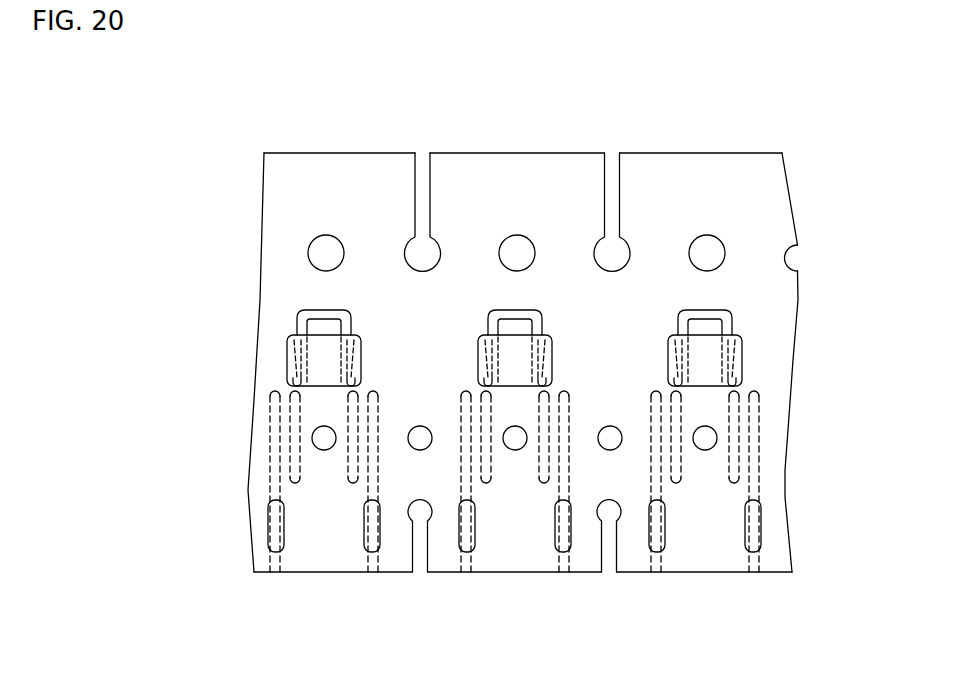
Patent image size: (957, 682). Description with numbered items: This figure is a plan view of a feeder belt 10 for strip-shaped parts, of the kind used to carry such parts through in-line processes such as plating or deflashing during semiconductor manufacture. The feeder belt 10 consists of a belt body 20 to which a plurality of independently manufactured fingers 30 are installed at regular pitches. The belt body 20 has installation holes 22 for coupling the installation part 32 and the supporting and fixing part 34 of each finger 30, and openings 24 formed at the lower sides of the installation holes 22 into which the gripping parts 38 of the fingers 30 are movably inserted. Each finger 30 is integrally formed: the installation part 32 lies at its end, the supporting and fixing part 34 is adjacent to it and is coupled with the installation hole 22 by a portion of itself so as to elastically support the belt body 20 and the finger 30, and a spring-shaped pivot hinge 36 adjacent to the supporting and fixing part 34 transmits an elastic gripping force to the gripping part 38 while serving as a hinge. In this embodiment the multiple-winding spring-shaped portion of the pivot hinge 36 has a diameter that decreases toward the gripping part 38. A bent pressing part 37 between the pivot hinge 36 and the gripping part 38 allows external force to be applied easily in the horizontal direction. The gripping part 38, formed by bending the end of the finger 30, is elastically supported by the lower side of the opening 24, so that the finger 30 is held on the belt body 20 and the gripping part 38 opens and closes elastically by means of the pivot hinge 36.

The feeder belt 10 is at (222, 168).
The belt body 20 is at (508, 170).
The installation hole 22 is at (515, 385).
The opening 24 is at (570, 530).
The finger 30 is at (464, 363).
The installation part 32 is at (318, 311).
The supporting and fixing part 34 is at (340, 362).
The pivot hinge 36 is at (353, 457).
The bent pressing part 37 is at (268, 513).
The gripping part 38 is at (277, 560).